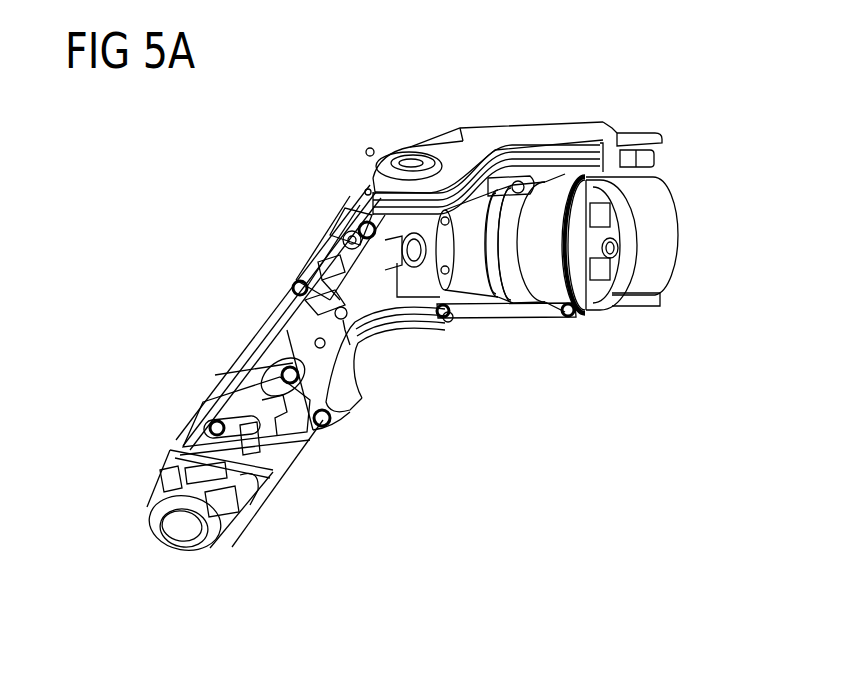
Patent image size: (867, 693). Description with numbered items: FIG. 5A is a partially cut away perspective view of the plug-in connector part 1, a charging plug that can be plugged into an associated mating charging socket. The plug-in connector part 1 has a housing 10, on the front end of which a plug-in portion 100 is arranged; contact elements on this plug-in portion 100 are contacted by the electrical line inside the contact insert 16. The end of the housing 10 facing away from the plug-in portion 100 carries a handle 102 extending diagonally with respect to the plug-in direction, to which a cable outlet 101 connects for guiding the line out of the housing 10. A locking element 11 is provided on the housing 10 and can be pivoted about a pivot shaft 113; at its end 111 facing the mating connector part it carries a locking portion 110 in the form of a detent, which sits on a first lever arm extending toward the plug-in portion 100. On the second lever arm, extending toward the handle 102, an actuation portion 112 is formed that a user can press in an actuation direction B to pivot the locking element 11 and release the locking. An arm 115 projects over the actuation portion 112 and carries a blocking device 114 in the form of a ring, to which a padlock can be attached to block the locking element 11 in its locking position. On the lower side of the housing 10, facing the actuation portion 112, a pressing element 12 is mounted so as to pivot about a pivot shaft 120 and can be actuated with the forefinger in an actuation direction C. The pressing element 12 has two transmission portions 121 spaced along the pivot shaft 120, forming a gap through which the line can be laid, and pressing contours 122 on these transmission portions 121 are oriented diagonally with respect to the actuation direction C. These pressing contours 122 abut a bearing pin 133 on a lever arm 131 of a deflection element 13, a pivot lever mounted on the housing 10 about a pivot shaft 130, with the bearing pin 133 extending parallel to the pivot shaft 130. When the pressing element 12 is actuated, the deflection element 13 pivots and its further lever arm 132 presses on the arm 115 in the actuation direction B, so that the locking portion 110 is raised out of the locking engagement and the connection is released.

The plug-in connector part 1 is at (479, 92).
The actuation direction B is at (378, 106).
The actuation direction C is at (418, 368).
The housing 10 is at (518, 318).
The locking element 11 is at (585, 128).
The pressing element 12 is at (378, 358).
The deflection element 13 is at (325, 302).
The contact insert 16 is at (568, 316).
The plug-in portion 100 is at (663, 273).
The cable outlet 101 is at (222, 542).
The handle 102 is at (238, 352).
The locking portion 110 is at (656, 157).
The end 111 is at (660, 136).
The actuation portion 112 is at (431, 143).
The pivot shaft 113 is at (521, 182).
The blocking device 114 is at (345, 208).
The arm 115 is at (368, 148).
The pivot shaft 120 is at (449, 322).
The transmission portions 121 is at (350, 350).
The pressing contours 122 is at (292, 384).
The pivot shaft 130 is at (333, 243).
The lever arm 131 is at (318, 288).
The lever arm 132 is at (352, 233).
The bearing pin 133 is at (312, 312).